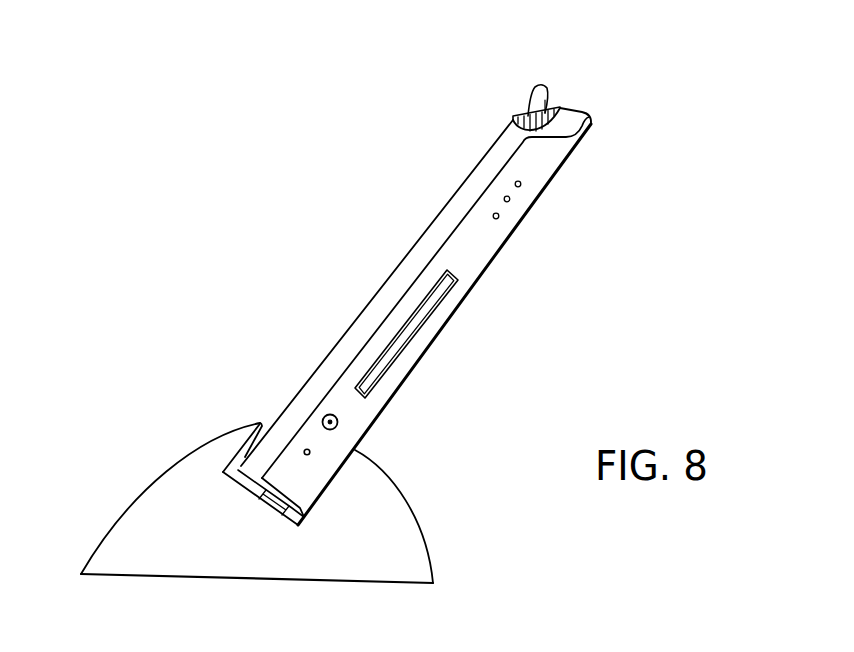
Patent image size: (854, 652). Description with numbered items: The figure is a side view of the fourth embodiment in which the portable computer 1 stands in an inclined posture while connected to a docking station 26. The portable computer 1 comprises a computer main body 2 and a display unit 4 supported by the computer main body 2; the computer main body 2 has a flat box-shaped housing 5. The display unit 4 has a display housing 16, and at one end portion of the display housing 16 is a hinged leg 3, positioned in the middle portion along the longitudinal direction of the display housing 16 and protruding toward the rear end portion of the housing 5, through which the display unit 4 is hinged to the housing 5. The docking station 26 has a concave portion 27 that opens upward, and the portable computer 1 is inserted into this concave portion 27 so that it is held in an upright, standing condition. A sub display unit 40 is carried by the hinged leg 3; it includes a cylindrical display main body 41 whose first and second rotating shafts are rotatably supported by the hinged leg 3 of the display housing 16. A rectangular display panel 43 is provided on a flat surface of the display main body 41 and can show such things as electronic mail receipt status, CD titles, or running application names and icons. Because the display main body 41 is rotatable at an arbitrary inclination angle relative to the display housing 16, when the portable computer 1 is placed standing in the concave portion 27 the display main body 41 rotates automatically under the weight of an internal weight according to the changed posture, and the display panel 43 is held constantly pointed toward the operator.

The portable computer 1 is at (428, 274).
The computer main body 2 is at (499, 252).
The hinged leg 3 is at (513, 120).
The display unit 4 is at (347, 334).
The housing 5 is at (400, 368).
The display housing 16 is at (436, 215).
The docking station 26 is at (412, 515).
The concave portion 27 is at (245, 449).
The sub display unit 40 is at (547, 69).
The display main body 41 is at (550, 100).
The display panel 43 is at (528, 97).